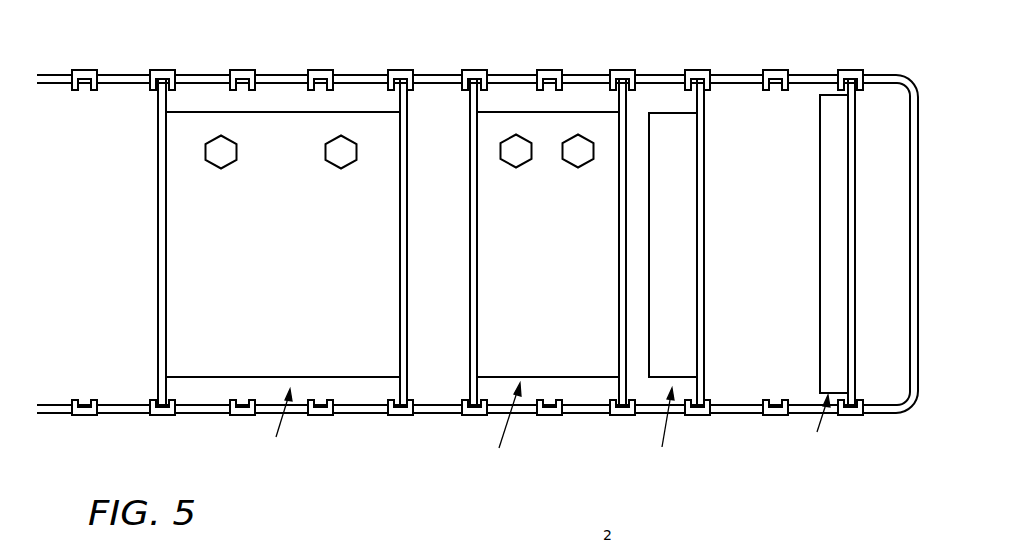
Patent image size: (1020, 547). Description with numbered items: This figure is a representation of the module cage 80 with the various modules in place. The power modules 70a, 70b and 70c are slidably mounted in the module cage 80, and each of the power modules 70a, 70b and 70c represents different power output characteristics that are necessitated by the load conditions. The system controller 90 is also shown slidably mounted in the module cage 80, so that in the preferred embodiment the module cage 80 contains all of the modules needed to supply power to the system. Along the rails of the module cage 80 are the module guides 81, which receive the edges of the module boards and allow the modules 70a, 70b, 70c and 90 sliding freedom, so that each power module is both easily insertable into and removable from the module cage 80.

The module cage 80 is at (893, 75).
The module guides 81 is at (488, 72).
The power module 70a is at (393, 335).
The power module 70b is at (487, 210).
The power module 70c is at (690, 253).
The system controller 90 is at (846, 251).